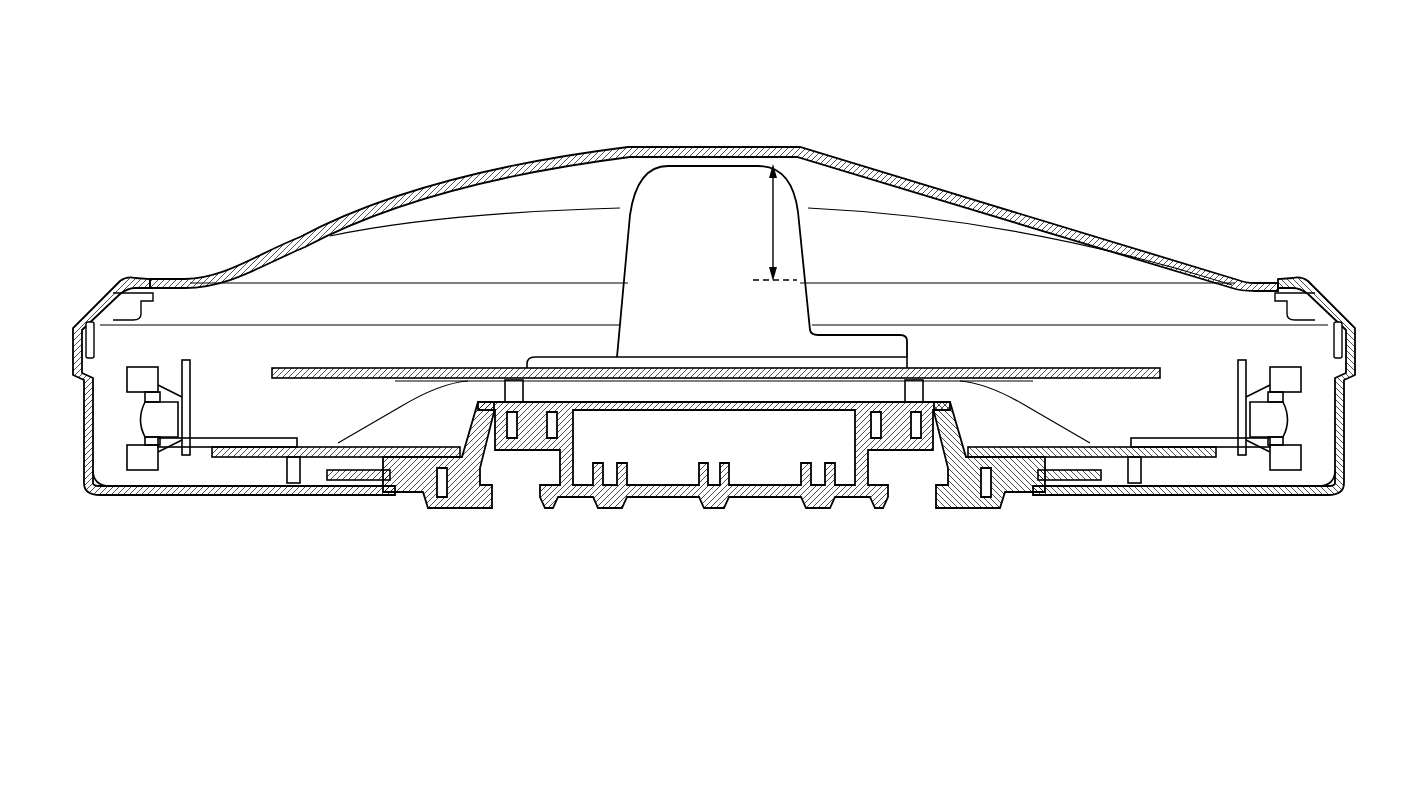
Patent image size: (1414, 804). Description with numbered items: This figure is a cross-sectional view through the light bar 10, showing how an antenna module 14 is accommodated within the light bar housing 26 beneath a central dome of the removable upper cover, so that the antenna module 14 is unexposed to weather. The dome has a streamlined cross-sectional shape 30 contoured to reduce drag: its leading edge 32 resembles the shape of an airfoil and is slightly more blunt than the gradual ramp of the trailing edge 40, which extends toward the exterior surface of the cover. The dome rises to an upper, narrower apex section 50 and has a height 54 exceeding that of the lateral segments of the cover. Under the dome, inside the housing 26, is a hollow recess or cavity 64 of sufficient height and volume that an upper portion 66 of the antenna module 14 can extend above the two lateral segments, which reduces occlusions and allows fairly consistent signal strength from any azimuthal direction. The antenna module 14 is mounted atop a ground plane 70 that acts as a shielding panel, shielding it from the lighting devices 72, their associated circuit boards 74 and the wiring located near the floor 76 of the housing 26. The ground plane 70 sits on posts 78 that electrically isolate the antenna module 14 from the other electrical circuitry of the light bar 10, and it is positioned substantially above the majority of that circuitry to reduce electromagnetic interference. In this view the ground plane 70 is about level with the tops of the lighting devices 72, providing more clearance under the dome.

The light bar 10 is at (934, 118).
The antenna module 14 is at (728, 243).
The light bar housing 26 is at (1345, 441).
The streamlined cross-sectional shape 30 is at (470, 177).
The leading edge 32 is at (333, 227).
The trailing edge 40 is at (1078, 228).
The apex section 50 is at (682, 146).
The height 54 is at (775, 237).
The cavity 64 is at (596, 194).
The upper portion 66 is at (720, 165).
The ground plane 70 is at (1083, 366).
The lighting devices 72 is at (128, 350).
The circuit boards 74 is at (192, 389).
The floor 76 is at (118, 482).
The posts 78 is at (503, 392).